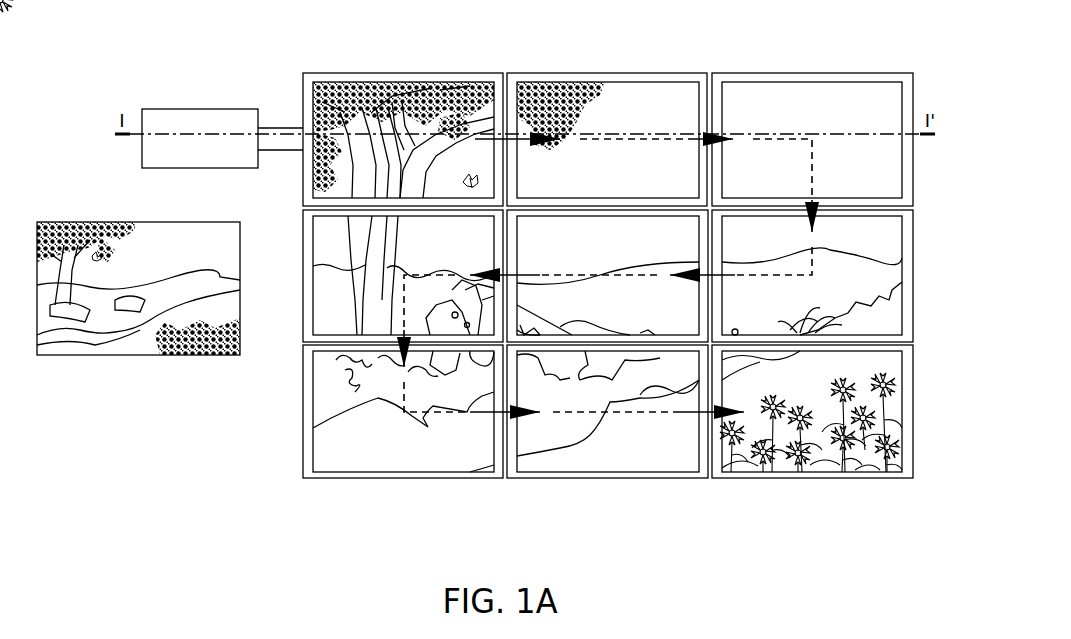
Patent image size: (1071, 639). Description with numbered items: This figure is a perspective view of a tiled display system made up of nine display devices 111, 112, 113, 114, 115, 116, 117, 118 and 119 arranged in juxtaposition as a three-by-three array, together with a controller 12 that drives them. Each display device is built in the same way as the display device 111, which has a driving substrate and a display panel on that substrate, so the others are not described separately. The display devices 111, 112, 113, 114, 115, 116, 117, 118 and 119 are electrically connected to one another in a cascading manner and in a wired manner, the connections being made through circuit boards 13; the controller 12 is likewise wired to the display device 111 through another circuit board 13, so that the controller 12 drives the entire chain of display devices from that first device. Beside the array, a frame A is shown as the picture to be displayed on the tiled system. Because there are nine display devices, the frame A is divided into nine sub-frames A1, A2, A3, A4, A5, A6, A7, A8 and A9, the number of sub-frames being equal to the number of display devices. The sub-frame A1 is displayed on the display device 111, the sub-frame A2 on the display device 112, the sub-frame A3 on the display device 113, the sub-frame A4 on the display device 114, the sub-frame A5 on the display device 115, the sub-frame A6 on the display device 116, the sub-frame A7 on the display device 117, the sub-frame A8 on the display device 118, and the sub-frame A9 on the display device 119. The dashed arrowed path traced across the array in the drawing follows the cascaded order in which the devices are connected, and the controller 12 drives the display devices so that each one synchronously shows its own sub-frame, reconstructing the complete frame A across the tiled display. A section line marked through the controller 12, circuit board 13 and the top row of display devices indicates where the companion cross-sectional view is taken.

The controller 12 is at (200, 117).
The circuit board 13 is at (281, 129).
The display device 111 is at (395, 75).
The display device 112 is at (590, 74).
The display device 113 is at (774, 74).
The display device 114 is at (910, 238).
The display device 115 is at (556, 342).
The display device 116 is at (308, 262).
The display device 117 is at (308, 395).
The display device 118 is at (658, 472).
The display device 119 is at (866, 478).
The frame A is at (124, 360).
The sub-frame A1 is at (450, 82).
The sub-frame A2 is at (647, 82).
The sub-frame A3 is at (830, 82).
The sub-frame A4 is at (888, 278).
The sub-frame A5 is at (553, 220).
The sub-frame A6 is at (320, 297).
The sub-frame A7 is at (320, 432).
The sub-frame A8 is at (607, 462).
The sub-frame A9 is at (815, 462).